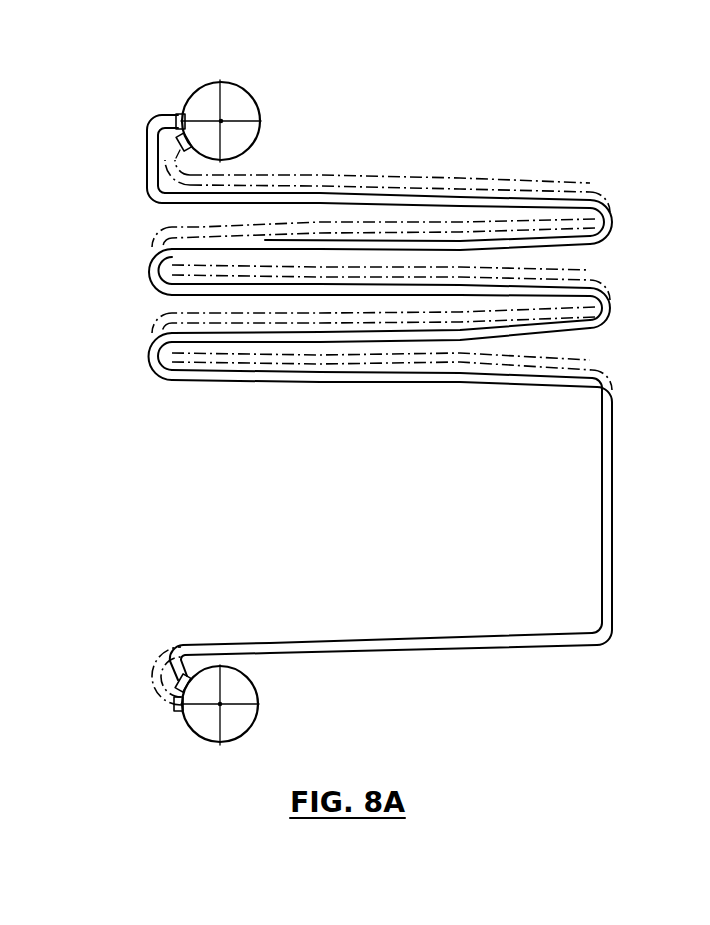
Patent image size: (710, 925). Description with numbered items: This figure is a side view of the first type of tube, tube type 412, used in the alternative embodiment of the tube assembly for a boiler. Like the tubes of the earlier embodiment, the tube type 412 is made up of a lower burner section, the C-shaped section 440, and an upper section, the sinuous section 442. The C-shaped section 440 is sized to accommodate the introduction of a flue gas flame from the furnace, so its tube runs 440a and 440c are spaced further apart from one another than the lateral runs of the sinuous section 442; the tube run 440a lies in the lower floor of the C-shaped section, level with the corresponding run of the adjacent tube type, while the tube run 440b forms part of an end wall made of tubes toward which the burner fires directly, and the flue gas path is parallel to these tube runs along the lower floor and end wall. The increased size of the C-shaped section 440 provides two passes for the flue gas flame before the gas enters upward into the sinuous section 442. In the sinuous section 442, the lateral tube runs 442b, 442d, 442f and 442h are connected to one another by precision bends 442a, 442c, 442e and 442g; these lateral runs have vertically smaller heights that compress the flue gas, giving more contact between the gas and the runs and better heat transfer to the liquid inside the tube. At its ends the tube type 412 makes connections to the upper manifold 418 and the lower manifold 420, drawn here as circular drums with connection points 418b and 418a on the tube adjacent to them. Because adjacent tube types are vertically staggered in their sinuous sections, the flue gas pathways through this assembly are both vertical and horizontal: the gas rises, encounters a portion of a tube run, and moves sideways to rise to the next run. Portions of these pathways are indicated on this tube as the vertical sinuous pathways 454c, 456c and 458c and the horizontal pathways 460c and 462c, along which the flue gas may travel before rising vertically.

The tube type 412 is at (436, 142).
The upper manifold 418 is at (249, 95).
The connector port 418a is at (178, 713).
The connector port 418b is at (177, 112).
The lower manifold 420 is at (257, 714).
The C-shaped section 440 is at (137, 642).
The tube run 440a is at (440, 655).
The tube run 440b is at (601, 520).
The tube run 440c is at (490, 381).
The sinuous section 442 is at (137, 200).
The precision bend 442a is at (148, 372).
The lateral tube run 442b is at (577, 328).
The precision bend 442c is at (611, 311).
The lateral tube run 442d is at (248, 292).
The precision bend 442e is at (150, 293).
The lateral tube run 442f is at (577, 243).
The precision bend 442g is at (612, 226).
The lateral tube run 442h is at (163, 212).
The inner conduit 454c is at (397, 365).
The inner conduit 456c is at (440, 318).
The inner conduit 458c is at (356, 280).
The inner conduit 460c is at (460, 250).
The inner conduit 462c is at (344, 196).